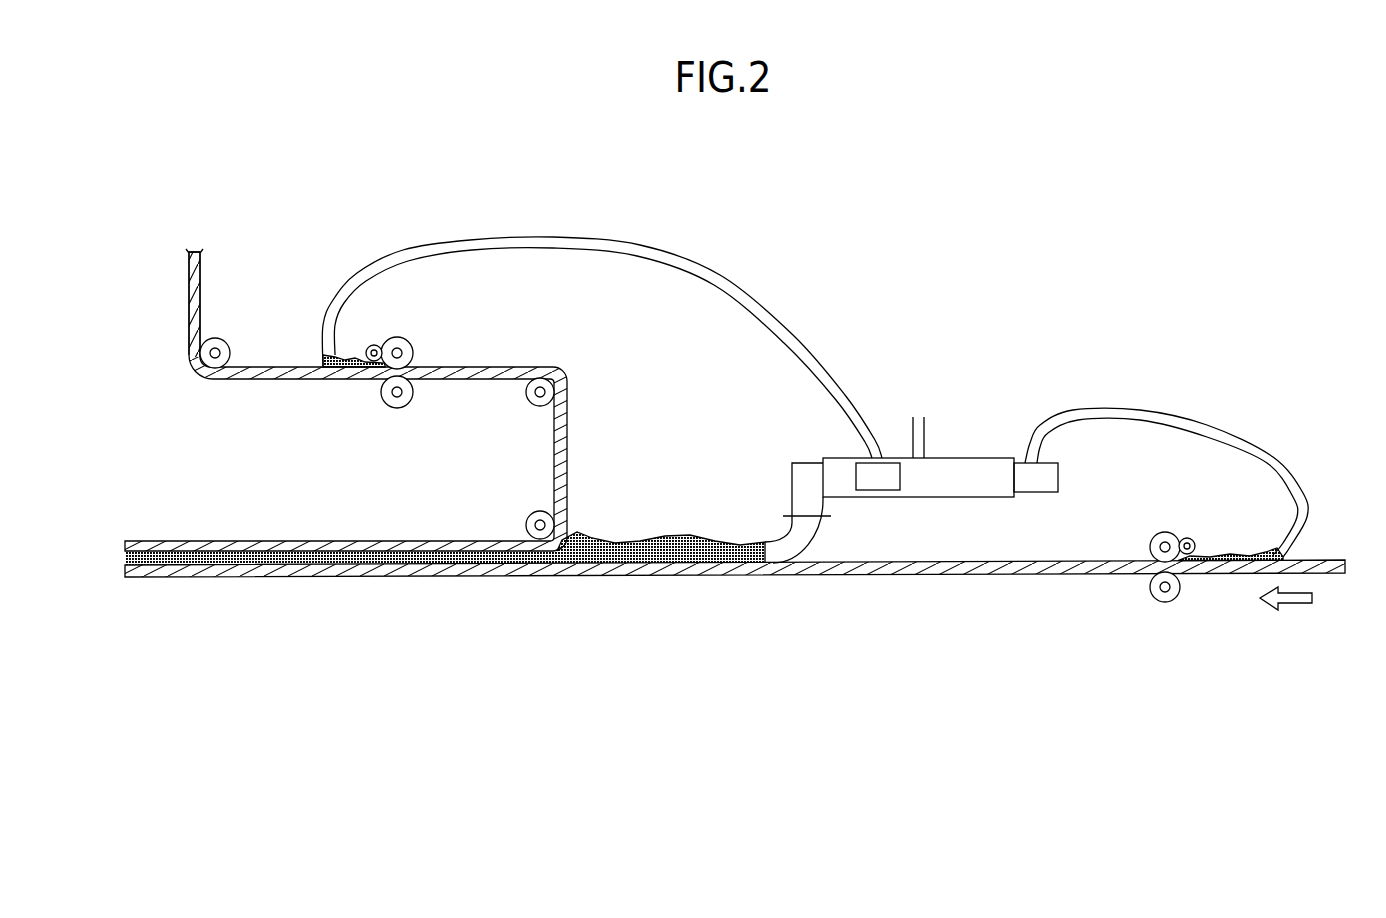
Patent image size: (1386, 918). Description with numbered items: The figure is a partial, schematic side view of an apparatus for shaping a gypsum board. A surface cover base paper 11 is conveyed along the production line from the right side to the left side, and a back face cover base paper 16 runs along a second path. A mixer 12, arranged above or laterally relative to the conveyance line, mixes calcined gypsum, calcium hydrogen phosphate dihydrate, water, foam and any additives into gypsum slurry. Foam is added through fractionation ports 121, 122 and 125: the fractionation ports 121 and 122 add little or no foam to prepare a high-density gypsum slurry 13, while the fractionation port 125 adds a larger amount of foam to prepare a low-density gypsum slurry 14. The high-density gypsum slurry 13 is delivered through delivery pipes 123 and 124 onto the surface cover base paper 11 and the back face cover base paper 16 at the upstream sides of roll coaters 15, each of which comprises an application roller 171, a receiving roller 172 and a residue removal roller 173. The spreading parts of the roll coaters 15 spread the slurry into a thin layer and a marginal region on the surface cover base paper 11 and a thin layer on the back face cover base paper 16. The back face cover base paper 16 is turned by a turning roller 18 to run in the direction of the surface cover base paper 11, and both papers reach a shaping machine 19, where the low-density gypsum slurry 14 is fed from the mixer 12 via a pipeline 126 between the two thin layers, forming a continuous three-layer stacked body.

The surface cover base paper 11 is at (1313, 560).
The mixer 12 is at (878, 470).
The fractionation port 121 is at (890, 470).
The fractionation port 122 is at (1018, 467).
The delivery pipe 123 is at (675, 260).
The delivery pipe 124 is at (1185, 415).
The fractionation port 125 is at (802, 477).
The pipeline 126 is at (775, 530).
The high-density gypsum slurry 13 is at (739, 377).
The low-density gypsum slurry 14 is at (750, 543).
The roll coater 15 is at (783, 499).
The back face cover base paper 16 is at (202, 268).
The application roller 171 is at (412, 348).
The receiving roller 172 is at (403, 408).
The residue removal roller 173 is at (374, 345).
The turning roller 18 is at (527, 408).
The shaping machine 19 is at (528, 523).